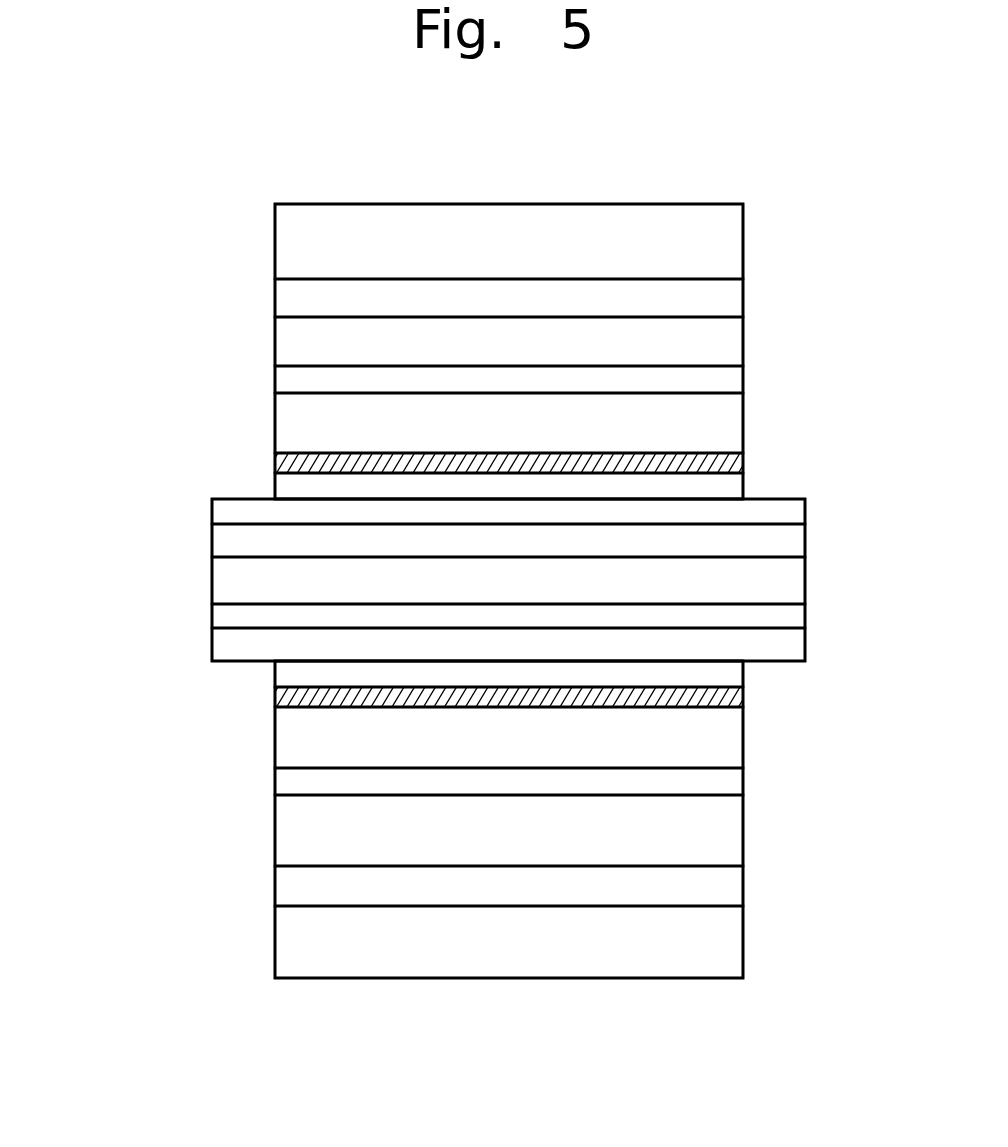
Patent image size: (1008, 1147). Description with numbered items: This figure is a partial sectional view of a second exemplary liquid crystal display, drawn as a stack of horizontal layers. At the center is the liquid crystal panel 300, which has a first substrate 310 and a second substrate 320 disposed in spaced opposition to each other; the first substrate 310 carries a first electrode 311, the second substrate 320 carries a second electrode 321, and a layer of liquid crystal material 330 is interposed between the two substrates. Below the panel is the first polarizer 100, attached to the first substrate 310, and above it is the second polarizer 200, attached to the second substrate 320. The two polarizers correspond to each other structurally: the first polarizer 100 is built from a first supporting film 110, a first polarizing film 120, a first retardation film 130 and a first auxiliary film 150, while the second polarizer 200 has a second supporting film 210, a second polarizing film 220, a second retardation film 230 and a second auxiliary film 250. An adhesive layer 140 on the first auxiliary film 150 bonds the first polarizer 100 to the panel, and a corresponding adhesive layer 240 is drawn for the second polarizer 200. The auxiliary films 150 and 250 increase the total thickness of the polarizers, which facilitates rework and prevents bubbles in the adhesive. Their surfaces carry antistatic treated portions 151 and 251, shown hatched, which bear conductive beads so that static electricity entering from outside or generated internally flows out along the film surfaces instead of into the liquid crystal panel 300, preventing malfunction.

The first polarizer 100 is at (848, 658).
The first supporting film 110 is at (723, 943).
The first polarizing film 120 is at (723, 888).
The first retardation film 130 is at (723, 830).
The adhesive layer 140 is at (723, 676).
The first auxiliary film 150 is at (723, 738).
The antistatic treated portion 151 is at (723, 700).
The second polarizer 200 is at (848, 222).
The second supporting film 210 is at (723, 240).
The second polarizing film 220 is at (723, 300).
The second retardation film 230 is at (723, 343).
The adhesive layer 240 is at (723, 385).
The second auxiliary film 250 is at (723, 420).
The antistatic treated portion 251 is at (723, 462).
The liquid crystal panel 300 is at (80, 497).
The first substrate 310 is at (222, 648).
The first electrode 311 is at (222, 617).
The second substrate 320 is at (222, 511).
The second electrode 321 is at (222, 543).
The liquid crystal material 330 is at (222, 581).